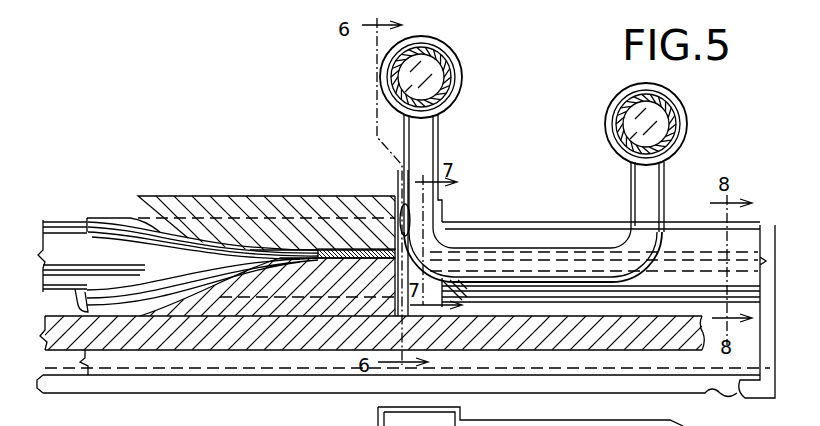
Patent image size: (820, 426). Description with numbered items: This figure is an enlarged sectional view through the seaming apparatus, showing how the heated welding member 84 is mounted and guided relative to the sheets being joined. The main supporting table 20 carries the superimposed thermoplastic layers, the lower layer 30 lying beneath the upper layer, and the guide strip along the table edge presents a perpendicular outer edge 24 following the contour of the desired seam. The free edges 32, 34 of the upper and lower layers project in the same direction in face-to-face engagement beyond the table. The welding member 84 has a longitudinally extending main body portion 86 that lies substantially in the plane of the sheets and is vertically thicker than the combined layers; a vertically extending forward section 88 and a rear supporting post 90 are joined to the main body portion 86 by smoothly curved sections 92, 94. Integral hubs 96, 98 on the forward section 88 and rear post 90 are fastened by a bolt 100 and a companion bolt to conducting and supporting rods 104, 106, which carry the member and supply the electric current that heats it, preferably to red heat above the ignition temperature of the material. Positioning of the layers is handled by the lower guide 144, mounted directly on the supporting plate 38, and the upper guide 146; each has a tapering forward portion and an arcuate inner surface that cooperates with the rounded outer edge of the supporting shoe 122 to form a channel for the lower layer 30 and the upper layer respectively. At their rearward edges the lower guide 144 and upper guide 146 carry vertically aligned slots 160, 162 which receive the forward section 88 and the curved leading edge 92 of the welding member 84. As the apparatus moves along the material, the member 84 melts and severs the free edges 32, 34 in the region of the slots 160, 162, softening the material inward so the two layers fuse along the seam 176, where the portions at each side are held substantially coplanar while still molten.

The main supporting table 20 is at (48, 364).
The outer edge of guide strip 24 is at (260, 385).
The lower layer of thermoplastic sheet material 30 is at (737, 362).
The free edge of upper layer 32 is at (132, 228).
The free edge of lower layer 34 is at (74, 300).
The supporting plate 38 is at (107, 333).
The welding member 84 is at (608, 207).
The main body portion 86 is at (600, 283).
The forward section 88 is at (430, 147).
The rear supporting post 90 is at (655, 198).
The smoothly curved section 92 is at (400, 195).
The smoothly curved section 94 is at (650, 257).
The hub 96 is at (460, 68).
The hub 98 is at (686, 115).
The bolt 100 is at (378, 423).
The conducting and supporting rod 104 is at (451, 90).
The conducting and supporting rod 106 is at (676, 142).
The supporting shoe 122 is at (53, 230).
The lower guide 144 is at (213, 287).
The upper guide 146 is at (208, 205).
The slot 160 is at (432, 280).
The slot 162 is at (396, 200).
The seam 176 is at (668, 263).